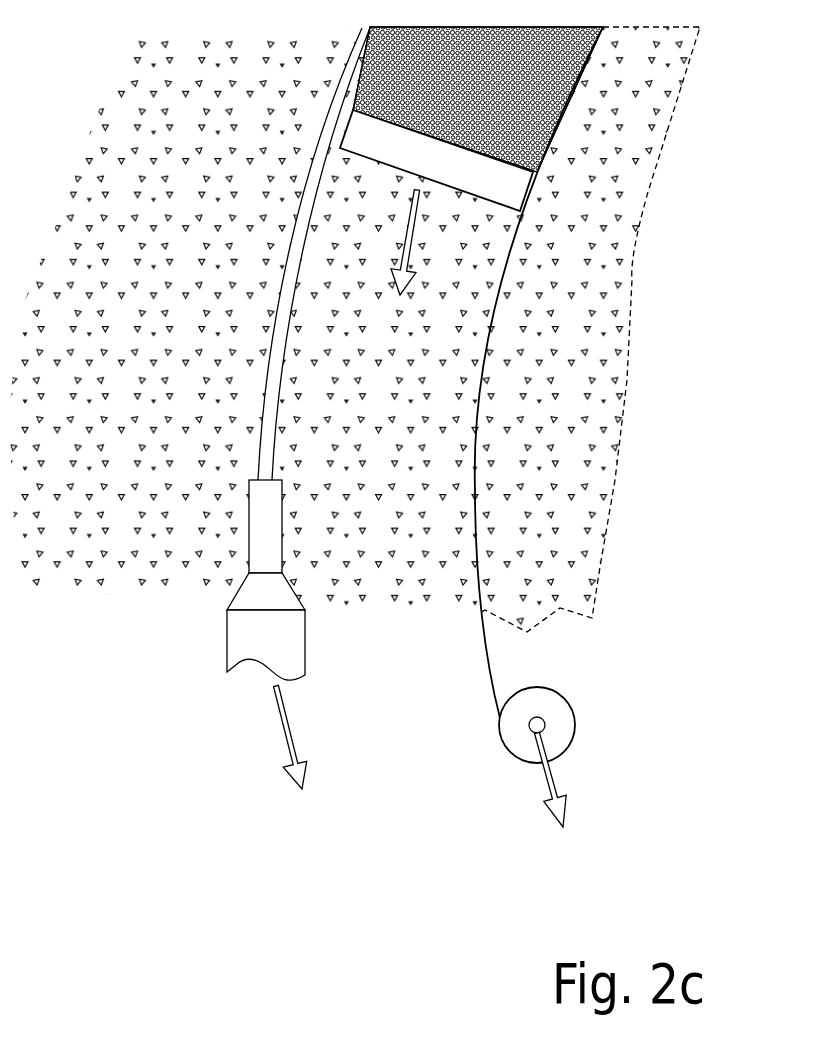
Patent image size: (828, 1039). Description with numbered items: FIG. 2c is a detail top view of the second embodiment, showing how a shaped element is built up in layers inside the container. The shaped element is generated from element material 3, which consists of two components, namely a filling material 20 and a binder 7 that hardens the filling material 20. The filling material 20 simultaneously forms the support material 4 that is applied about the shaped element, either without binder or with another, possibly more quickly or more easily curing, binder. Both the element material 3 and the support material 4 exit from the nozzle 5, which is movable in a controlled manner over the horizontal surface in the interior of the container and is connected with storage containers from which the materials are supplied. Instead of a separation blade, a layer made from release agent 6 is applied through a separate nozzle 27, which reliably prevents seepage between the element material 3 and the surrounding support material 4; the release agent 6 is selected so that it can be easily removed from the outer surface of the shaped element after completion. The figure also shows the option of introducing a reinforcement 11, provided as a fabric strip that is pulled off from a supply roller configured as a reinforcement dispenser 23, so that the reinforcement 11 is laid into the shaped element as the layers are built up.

The element material 3 is at (478, 99).
The support material 4 is at (423, 329).
The nozzle 5 is at (436, 160).
The release agent 6 is at (325, 142).
The binder 7 is at (478, 99).
The reinforcement 11 is at (482, 660).
The filling material 20 is at (355, 329).
The reinforcement dispenser 23 is at (545, 721).
The separate nozzle 27 is at (258, 550).